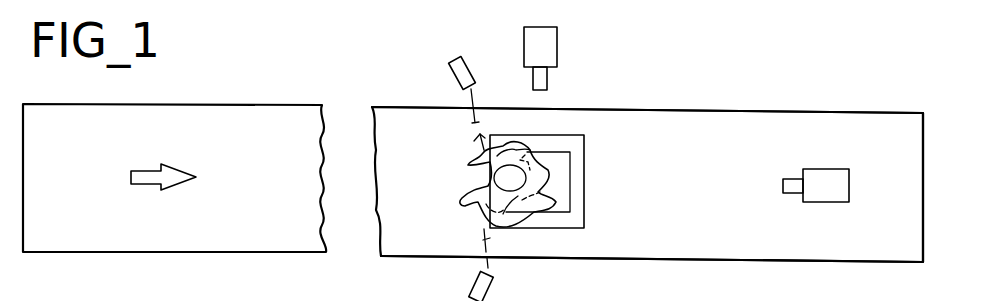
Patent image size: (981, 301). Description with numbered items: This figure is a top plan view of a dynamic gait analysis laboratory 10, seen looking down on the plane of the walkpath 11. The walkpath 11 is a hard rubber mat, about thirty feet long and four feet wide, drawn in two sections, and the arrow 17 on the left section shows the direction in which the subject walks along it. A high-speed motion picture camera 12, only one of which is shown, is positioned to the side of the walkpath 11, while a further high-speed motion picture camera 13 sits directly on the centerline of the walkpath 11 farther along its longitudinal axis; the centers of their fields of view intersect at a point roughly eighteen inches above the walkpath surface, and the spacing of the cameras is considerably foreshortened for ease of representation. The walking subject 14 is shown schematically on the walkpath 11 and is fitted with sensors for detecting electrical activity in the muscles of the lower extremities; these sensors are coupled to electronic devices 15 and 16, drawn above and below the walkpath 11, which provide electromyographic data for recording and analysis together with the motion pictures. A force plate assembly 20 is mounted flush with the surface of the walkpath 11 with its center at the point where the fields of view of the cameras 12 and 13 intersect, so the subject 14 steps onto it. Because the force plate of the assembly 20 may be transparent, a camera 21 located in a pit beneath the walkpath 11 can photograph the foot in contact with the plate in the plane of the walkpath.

The dynamic gait analysis laboratory 10 is at (370, 83).
The walkpath 11 is at (847, 248).
The high-speed motion picture camera 12 is at (552, 50).
The high-speed motion picture camera 13 is at (820, 172).
The walking subject 14 is at (488, 185).
The electronic device 15 is at (470, 287).
The electronic device 16 is at (470, 58).
The arrow 17 is at (157, 183).
The force plate assembly 20 is at (595, 164).
The camera 21 is at (564, 192).